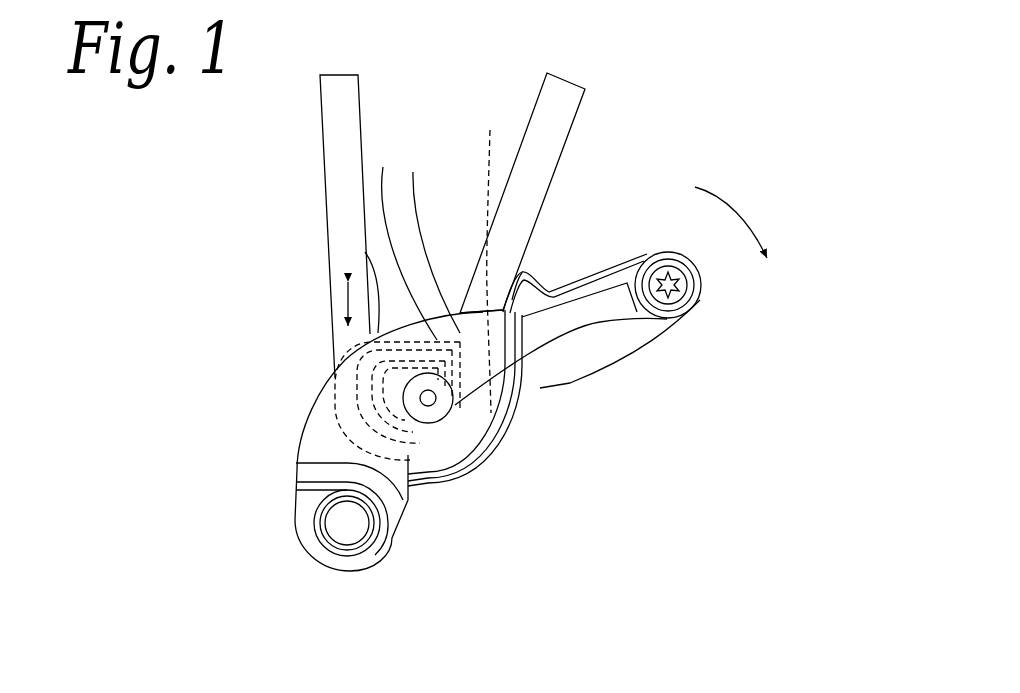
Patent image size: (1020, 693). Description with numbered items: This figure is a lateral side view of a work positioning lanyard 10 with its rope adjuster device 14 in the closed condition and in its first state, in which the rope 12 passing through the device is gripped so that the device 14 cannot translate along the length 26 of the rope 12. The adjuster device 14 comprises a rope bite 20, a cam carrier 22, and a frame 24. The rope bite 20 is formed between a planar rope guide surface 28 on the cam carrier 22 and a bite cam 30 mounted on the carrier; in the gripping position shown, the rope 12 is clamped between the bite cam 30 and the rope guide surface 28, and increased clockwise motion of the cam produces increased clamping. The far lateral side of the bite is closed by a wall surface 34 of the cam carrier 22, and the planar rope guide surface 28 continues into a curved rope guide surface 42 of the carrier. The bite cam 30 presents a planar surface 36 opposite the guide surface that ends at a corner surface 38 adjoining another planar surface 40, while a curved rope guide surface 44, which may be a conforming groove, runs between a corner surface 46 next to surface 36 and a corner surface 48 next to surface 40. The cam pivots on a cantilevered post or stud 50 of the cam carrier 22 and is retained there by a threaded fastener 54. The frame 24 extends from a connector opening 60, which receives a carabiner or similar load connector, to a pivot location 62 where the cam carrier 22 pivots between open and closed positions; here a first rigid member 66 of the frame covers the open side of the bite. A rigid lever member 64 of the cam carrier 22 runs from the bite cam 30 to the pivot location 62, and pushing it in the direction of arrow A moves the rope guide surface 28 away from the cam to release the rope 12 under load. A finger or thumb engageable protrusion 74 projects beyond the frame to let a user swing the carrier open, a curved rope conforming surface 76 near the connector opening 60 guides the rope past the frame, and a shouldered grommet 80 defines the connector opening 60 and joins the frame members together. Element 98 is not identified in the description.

The work positioning lanyard 10 is at (637, 100).
The rope 12 is at (363, 86).
The rope adjuster device 14 is at (628, 363).
The rope bite 20 is at (479, 318).
The cam carrier 22 is at (505, 456).
The frame 24 is at (325, 574).
The length of the rope 26 is at (347, 303).
The rope guide surface 28 is at (487, 259).
The bite cam 30 is at (384, 168).
The wall surface 34 is at (437, 345).
The planar surface 36 is at (447, 401).
The corner surface 38 is at (413, 172).
The planar surface 40 is at (365, 251).
The curved rope guide surface 42 is at (443, 427).
The curved rope guide surface 44 is at (380, 418).
The corner surface 46 is at (487, 460).
The corner surface 48 is at (365, 341).
The post or stud 50 is at (432, 428).
The fastener 54 is at (443, 416).
The connector opening 60 is at (348, 530).
The pivot location 62 is at (702, 288).
The rigid lever member 64 is at (614, 264).
The first rigid member 66 is at (312, 428).
The protrusion 74 is at (538, 278).
The rope conforming surface 76 is at (393, 537).
The shouldered grommet 80 is at (318, 528).
The inner bracket wall 98 is at (470, 455).
The arrow A is at (748, 217).